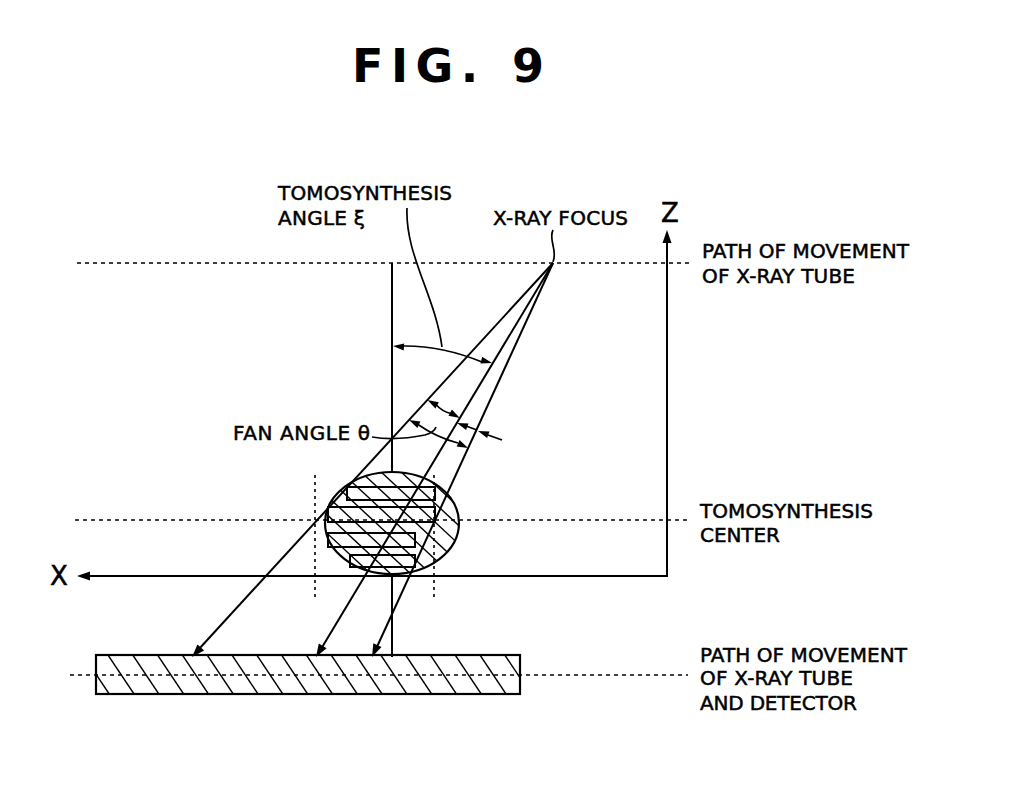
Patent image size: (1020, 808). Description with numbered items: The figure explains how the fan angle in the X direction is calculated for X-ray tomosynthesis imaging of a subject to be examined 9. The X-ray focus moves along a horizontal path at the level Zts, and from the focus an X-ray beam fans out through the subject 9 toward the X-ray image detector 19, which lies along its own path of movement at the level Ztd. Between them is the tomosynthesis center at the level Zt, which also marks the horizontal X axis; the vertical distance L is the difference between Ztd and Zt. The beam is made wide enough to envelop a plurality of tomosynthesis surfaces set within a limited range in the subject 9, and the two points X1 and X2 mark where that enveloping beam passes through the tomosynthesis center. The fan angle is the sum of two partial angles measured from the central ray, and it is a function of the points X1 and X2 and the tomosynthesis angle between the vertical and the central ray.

The subject to be examined 9 is at (459, 511).
The X-ray image detector 19 is at (310, 694).
The first point X1 is at (315, 551).
The second point X2 is at (434, 551).
The focus Z-coordinate Zts is at (361, 261).
The tomosynthesis center Z-coordinate Zt is at (365, 518).
The detector Z-coordinate Ztd is at (358, 673).